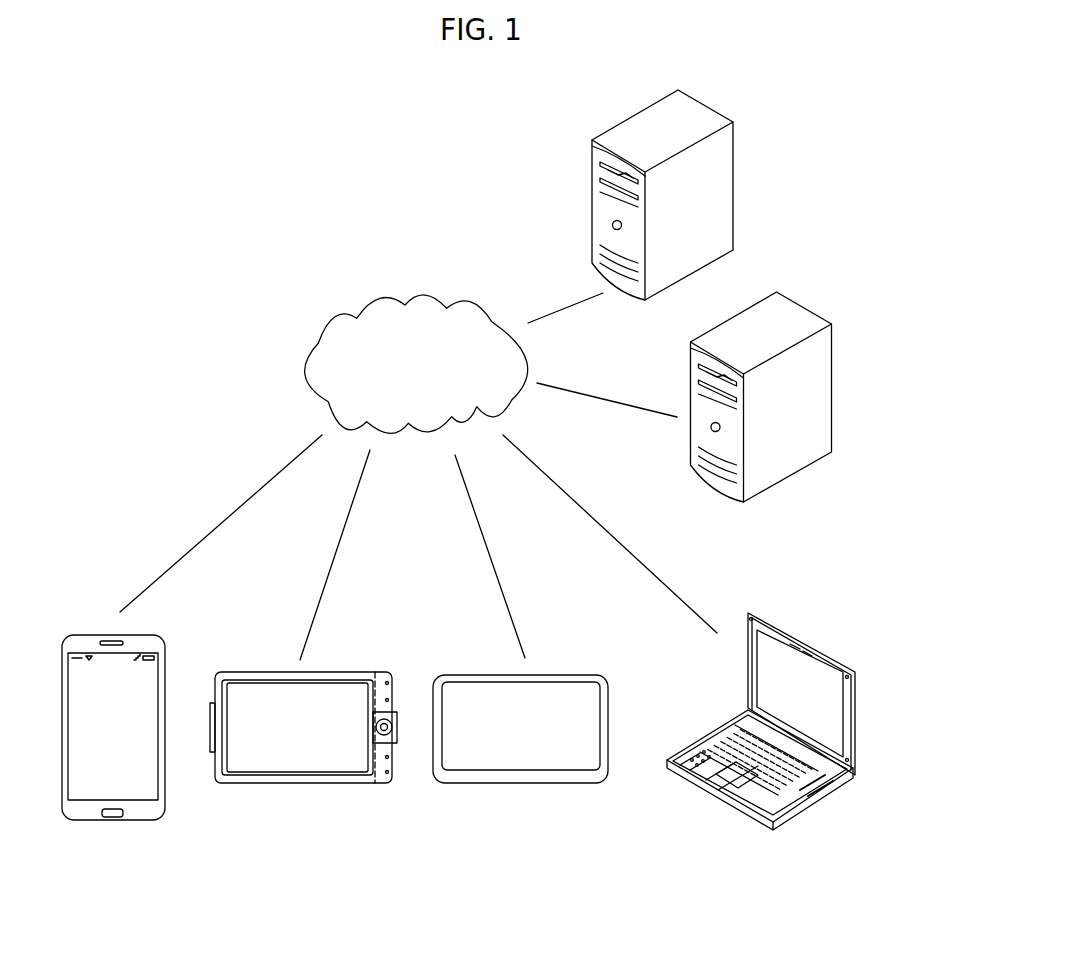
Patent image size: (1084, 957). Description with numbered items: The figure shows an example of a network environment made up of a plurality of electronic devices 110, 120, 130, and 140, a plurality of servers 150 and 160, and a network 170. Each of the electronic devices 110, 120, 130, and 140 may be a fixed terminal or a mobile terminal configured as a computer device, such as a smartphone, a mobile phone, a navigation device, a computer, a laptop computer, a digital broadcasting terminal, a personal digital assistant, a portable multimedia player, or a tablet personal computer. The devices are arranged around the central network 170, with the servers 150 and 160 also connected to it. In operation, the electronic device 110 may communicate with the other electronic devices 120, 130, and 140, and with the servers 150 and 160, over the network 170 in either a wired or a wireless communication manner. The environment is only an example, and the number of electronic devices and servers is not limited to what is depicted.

The electronic device 110 is at (115, 820).
The electronic device 120 is at (303, 783).
The electronic device 130 is at (520, 783).
The electronic device 140 is at (858, 722).
The server 150 is at (832, 387).
The server 160 is at (733, 183).
The network 170 is at (418, 295).